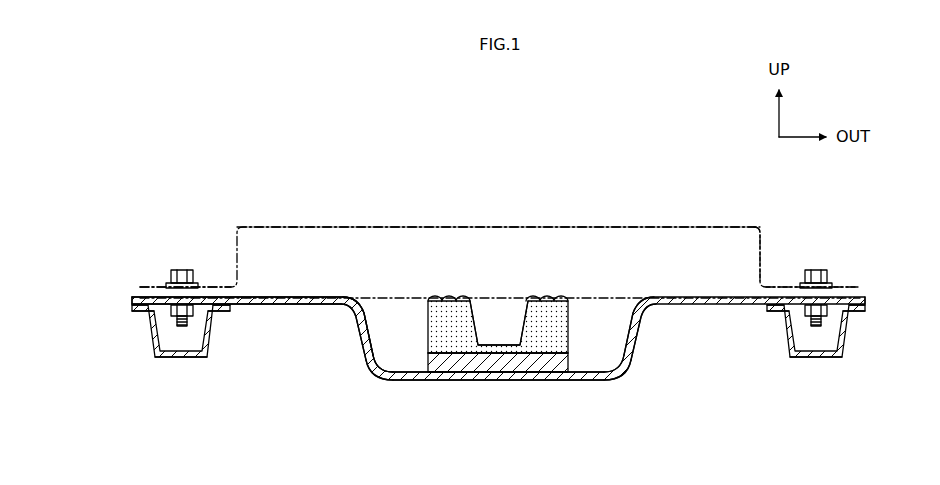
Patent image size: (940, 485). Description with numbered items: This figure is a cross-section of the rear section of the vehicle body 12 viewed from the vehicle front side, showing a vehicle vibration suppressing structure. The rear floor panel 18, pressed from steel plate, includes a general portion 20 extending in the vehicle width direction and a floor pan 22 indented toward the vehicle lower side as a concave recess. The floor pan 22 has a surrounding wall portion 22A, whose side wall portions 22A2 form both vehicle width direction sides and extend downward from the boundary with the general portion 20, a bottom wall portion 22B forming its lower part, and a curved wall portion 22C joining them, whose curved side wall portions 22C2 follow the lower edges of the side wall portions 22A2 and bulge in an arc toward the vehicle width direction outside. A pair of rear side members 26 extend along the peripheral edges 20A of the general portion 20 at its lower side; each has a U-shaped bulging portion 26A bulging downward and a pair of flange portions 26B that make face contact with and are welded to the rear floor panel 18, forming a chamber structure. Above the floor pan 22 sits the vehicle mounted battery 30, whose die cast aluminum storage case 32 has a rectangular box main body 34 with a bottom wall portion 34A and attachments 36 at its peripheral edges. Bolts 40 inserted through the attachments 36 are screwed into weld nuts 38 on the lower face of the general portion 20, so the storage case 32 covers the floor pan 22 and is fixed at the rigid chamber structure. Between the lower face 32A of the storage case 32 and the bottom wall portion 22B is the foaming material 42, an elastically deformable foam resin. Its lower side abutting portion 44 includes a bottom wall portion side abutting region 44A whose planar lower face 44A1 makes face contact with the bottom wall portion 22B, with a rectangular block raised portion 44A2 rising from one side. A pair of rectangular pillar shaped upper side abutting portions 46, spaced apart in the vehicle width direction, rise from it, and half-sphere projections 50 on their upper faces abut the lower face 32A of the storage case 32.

The vehicle body 12 is at (602, 142).
The rear floor panel 18 is at (362, 418).
The general portion 20 is at (264, 308).
The peripheral edge 20A is at (135, 299).
The floor pan 22 is at (430, 384).
The side wall portion 22A2 is at (364, 322).
The surrounding wall portion 22A is at (351, 305).
The bottom wall portion 22B is at (588, 381).
The curved side wall portion 22C2 is at (369, 374).
The curved wall portion 22C is at (320, 376).
The rear side member 26 is at (150, 349).
The bulging portion 26A is at (176, 358).
The flange portion 26B is at (139, 309).
The vehicle mounted battery 30 is at (498, 191).
The storage case 32 is at (668, 207).
The lower face 32A is at (620, 299).
The main body 34 is at (745, 228).
The bottom wall portion 34A is at (736, 302).
The attachment 36 is at (171, 286).
The weld nut 38 is at (170, 310).
The bolt 40 is at (184, 270).
The foaming material 42 is at (498, 330).
The lower side abutting portion 44 is at (428, 358).
The bottom wall portion side abutting region 44A is at (490, 364).
The lower face 44A1 is at (558, 374).
The raised portion 44A2 is at (494, 347).
The upper side abutting portion 46 is at (429, 318).
The projection 50 is at (441, 299).